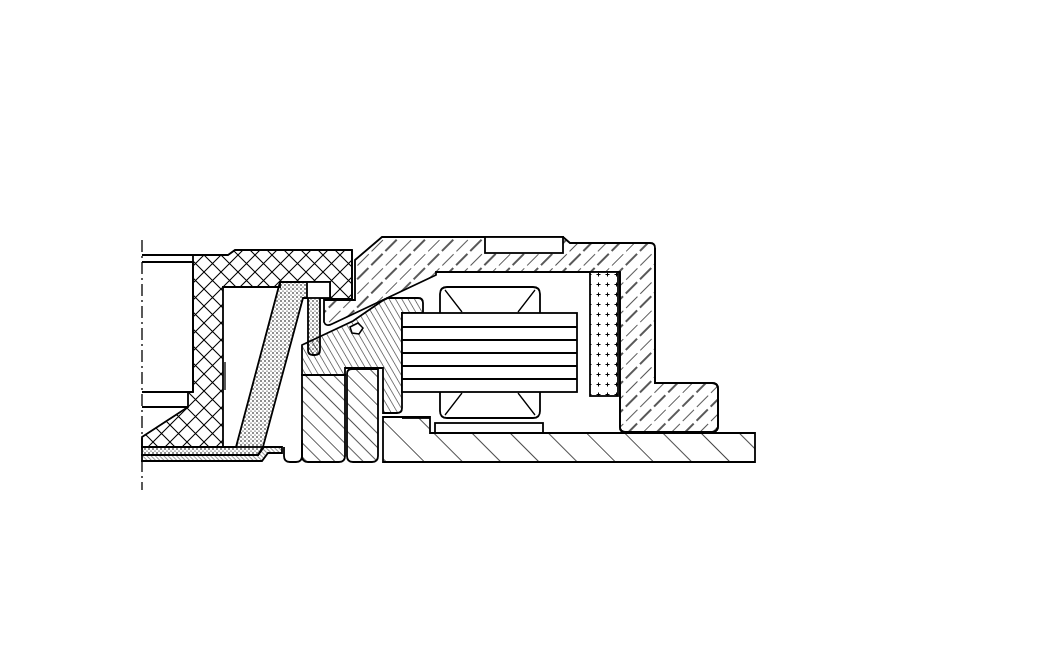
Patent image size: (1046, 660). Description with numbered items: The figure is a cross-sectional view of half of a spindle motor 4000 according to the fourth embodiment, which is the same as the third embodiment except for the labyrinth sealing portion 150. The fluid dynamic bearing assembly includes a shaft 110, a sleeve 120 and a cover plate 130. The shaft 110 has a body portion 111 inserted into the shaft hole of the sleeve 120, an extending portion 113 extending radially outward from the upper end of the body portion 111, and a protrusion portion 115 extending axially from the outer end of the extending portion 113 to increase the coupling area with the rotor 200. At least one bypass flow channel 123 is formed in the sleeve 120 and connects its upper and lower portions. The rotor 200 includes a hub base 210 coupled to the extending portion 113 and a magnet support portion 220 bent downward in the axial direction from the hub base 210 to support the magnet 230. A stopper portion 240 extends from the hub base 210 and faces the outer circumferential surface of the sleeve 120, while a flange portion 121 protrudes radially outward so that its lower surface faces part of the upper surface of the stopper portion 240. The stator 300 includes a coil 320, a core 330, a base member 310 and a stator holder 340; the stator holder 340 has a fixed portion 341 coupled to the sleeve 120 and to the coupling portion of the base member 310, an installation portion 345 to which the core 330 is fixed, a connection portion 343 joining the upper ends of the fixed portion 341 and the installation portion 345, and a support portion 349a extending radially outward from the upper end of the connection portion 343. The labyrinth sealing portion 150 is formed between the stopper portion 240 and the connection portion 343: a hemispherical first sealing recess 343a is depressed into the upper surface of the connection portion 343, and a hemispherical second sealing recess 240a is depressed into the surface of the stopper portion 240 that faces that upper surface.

The spindle motor 4000 is at (617, 52).
The shaft 110 is at (387, 88).
The body portion 111 is at (196, 255).
The extending portion 113 is at (258, 252).
The protrusion portion 115 is at (342, 257).
The sleeve 120 is at (234, 412).
The flange portion 121 is at (300, 282).
The bypass flow channel 123 is at (258, 462).
The cover plate 130 is at (165, 463).
The labyrinth sealing portion 150 is at (304, 293).
The rotor 200 is at (660, 190).
The hub base 210 is at (458, 250).
The magnet support portion 220 is at (657, 267).
The magnet 230 is at (606, 322).
The stopper portion 240 is at (380, 238).
The second sealing recess 240a is at (318, 284).
The stator 300 is at (648, 532).
The base member 310 is at (628, 437).
The coil 320 is at (502, 372).
The core 330 is at (500, 440).
The stator holder 340 is at (455, 532).
The fixed portion 341 is at (331, 462).
The connection portion 343 is at (363, 462).
The first sealing recess 343a is at (350, 328).
The installation portion 345 is at (410, 462).
The support portion 349a is at (456, 307).